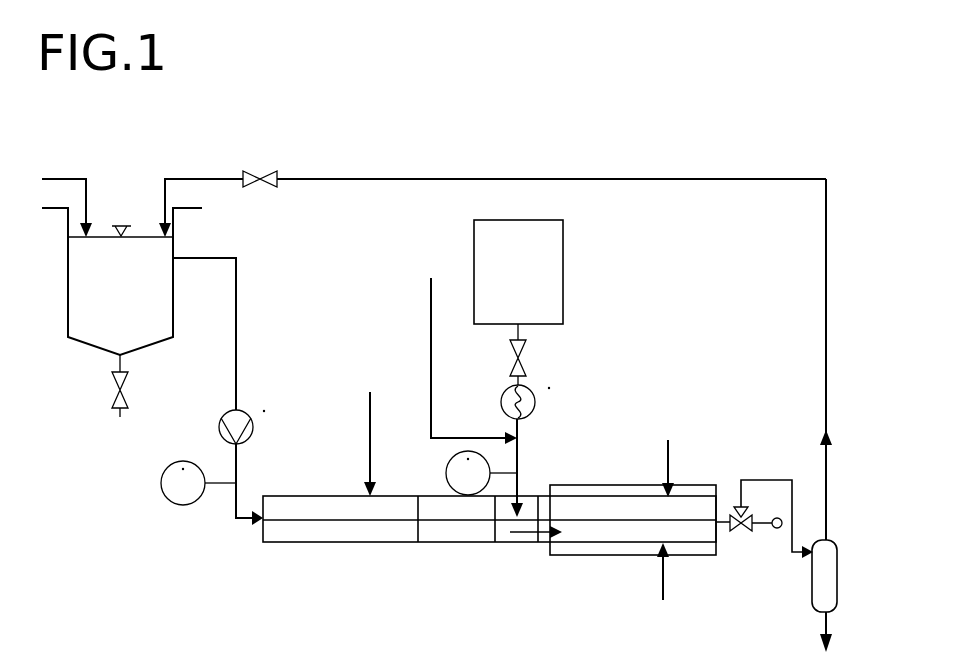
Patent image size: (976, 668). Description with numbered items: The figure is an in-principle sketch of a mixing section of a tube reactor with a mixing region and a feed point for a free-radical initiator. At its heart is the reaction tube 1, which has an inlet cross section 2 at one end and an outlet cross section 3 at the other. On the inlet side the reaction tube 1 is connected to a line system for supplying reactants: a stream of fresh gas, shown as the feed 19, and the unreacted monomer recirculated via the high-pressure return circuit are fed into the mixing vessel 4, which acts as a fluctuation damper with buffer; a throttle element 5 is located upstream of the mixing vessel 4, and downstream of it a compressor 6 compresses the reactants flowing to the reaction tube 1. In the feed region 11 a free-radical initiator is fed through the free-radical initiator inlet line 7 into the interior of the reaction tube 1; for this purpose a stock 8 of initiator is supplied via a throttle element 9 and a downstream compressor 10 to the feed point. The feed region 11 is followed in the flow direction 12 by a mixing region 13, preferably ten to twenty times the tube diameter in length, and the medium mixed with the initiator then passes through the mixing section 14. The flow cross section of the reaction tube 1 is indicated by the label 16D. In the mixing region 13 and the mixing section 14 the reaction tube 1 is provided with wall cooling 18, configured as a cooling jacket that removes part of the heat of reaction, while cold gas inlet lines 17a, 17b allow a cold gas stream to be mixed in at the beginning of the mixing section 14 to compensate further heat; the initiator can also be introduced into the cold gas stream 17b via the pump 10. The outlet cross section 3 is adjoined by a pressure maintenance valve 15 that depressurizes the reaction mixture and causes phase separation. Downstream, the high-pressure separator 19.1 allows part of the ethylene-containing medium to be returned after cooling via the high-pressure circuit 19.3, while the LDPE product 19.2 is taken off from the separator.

The reaction tube 1 is at (436, 546).
The inlet cross section 2 is at (246, 529).
The outlet cross section 3 is at (712, 510).
The mixing vessel 4 is at (160, 321).
The throttle element 5 is at (262, 186).
The compressor 6 is at (247, 437).
The free-radical initiator inlet line 7 is at (530, 478).
The stock of free-radical initiator 8 is at (553, 297).
The throttle element 9 is at (528, 345).
The compressor 10 is at (501, 400).
The feed region 11 is at (512, 549).
The flow direction 12 is at (543, 537).
The mixing region 13 is at (566, 506).
The mixing section 14 is at (592, 528).
The pressure maintenance valve 15 is at (741, 533).
The flow cross section 16D is at (674, 455).
The cold gas inlet line 17a is at (372, 429).
The cold gas inlet line 17b is at (465, 347).
The wall cooling 18 is at (630, 483).
The feed stream 19 is at (67, 193).
The high-pressure separator 19.1 is at (820, 590).
The product 19.2 is at (817, 635).
The high-pressure circuit 19.3 is at (605, 180).